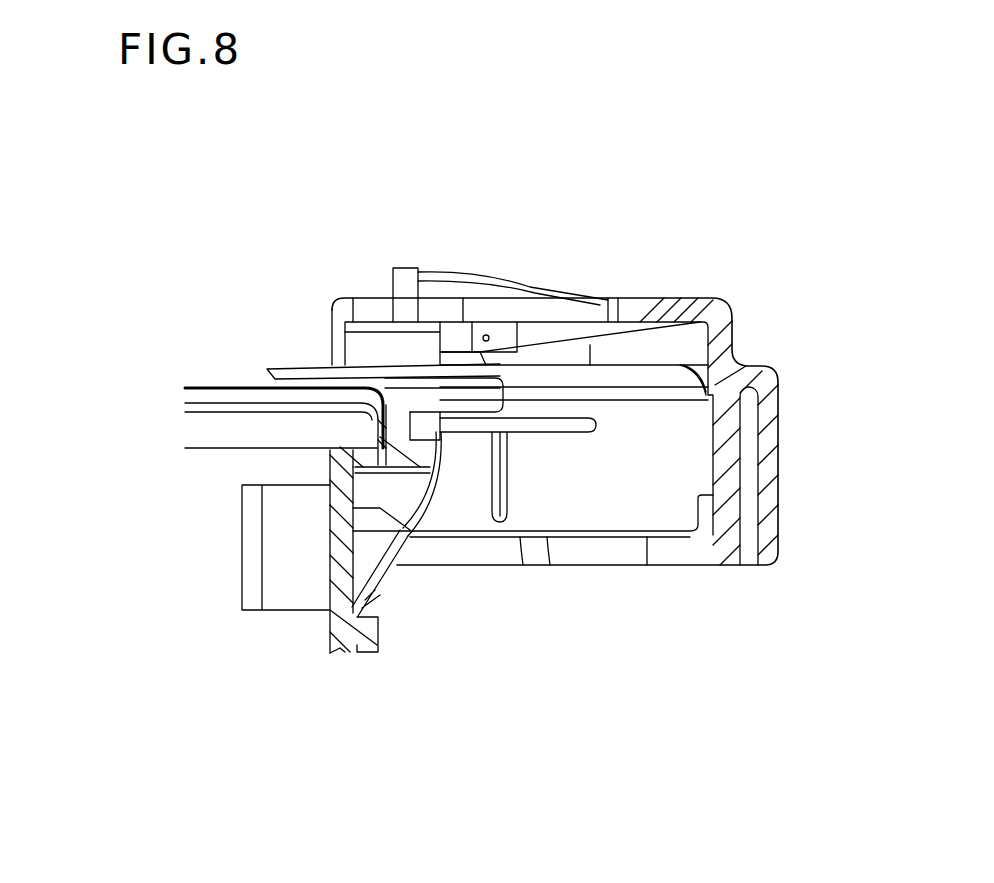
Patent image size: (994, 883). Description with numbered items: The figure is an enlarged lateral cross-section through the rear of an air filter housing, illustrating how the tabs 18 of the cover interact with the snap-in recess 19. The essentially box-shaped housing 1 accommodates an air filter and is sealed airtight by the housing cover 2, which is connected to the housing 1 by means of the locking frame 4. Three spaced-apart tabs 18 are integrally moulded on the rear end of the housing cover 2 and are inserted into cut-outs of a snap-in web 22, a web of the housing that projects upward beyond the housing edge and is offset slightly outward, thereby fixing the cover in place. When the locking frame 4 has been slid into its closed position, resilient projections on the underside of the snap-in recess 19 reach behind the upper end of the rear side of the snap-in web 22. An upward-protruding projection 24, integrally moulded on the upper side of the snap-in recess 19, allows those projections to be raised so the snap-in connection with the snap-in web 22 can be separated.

The housing 1 is at (378, 648).
The housing cover 2 is at (310, 368).
The locking frame 4 is at (783, 452).
The tabs 18 is at (417, 397).
The snap-in recess 19 is at (662, 303).
The snap-in web 22 is at (488, 335).
The projection 24 is at (428, 288).